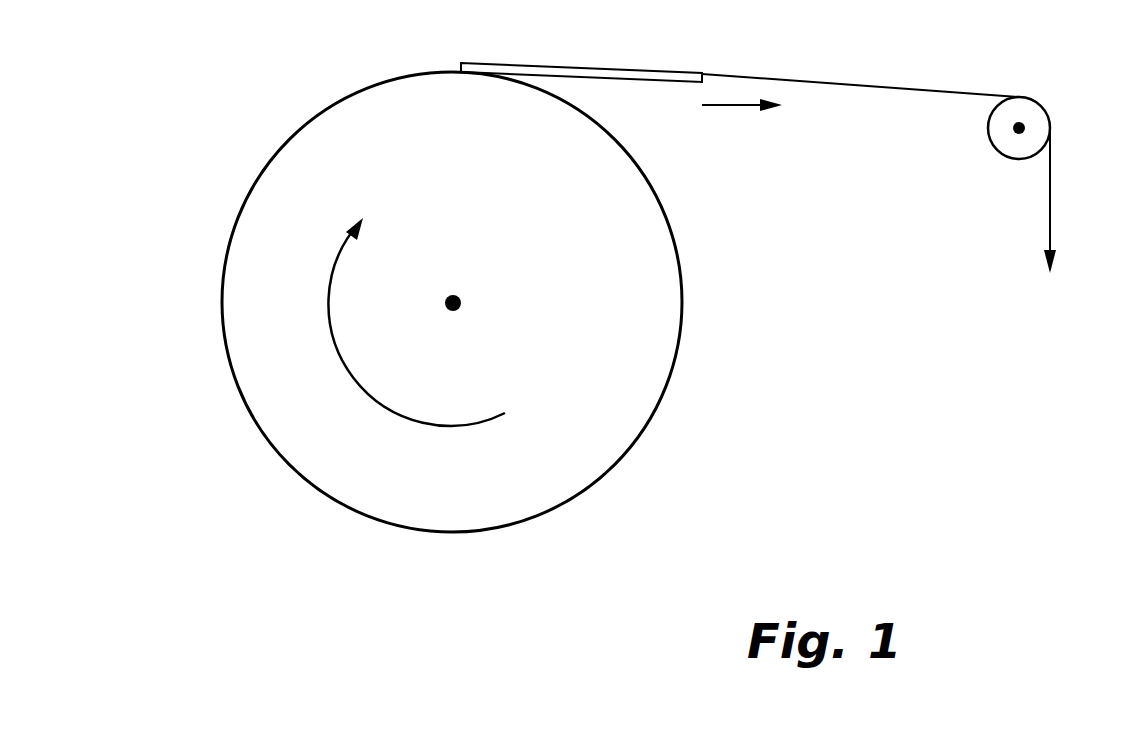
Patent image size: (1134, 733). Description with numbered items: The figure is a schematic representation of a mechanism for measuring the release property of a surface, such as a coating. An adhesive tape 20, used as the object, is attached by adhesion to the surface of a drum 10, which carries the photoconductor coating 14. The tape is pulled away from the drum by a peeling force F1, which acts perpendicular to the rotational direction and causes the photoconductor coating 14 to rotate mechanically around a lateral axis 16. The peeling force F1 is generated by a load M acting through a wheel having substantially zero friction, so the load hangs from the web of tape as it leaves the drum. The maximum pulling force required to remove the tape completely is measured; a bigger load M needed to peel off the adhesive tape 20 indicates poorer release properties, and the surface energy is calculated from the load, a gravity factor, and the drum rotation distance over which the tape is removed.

The drum 10 is at (453, 302).
The photoconductor coating 14 is at (682, 267).
The lateral axis 16 is at (462, 298).
The adhesive tape 20 is at (608, 67).
The load M is at (1053, 262).
The peeling force F1 is at (742, 107).